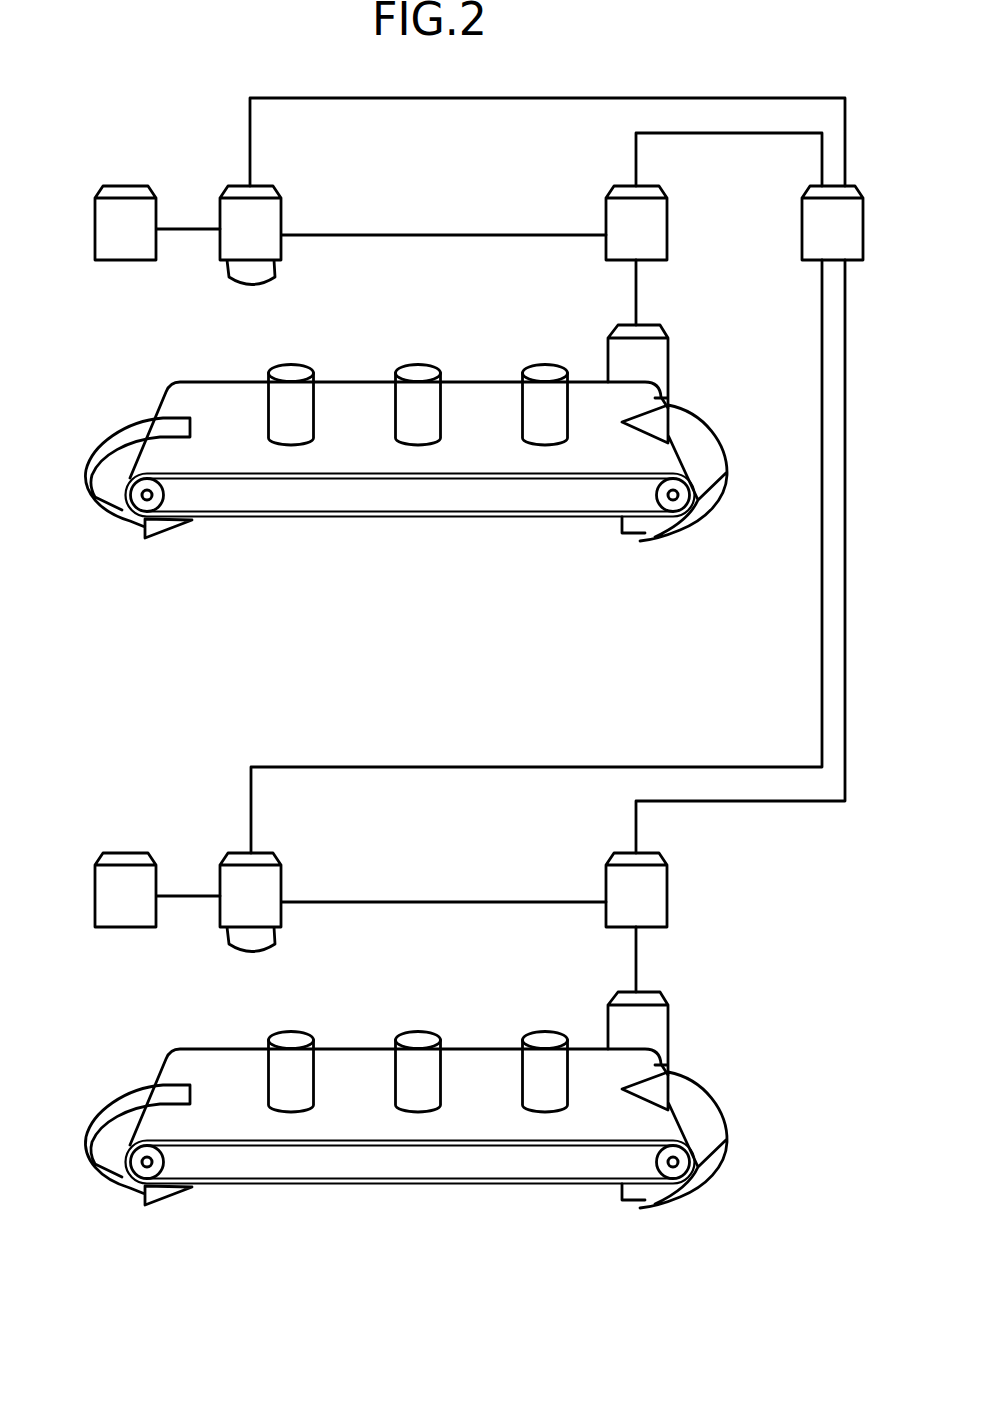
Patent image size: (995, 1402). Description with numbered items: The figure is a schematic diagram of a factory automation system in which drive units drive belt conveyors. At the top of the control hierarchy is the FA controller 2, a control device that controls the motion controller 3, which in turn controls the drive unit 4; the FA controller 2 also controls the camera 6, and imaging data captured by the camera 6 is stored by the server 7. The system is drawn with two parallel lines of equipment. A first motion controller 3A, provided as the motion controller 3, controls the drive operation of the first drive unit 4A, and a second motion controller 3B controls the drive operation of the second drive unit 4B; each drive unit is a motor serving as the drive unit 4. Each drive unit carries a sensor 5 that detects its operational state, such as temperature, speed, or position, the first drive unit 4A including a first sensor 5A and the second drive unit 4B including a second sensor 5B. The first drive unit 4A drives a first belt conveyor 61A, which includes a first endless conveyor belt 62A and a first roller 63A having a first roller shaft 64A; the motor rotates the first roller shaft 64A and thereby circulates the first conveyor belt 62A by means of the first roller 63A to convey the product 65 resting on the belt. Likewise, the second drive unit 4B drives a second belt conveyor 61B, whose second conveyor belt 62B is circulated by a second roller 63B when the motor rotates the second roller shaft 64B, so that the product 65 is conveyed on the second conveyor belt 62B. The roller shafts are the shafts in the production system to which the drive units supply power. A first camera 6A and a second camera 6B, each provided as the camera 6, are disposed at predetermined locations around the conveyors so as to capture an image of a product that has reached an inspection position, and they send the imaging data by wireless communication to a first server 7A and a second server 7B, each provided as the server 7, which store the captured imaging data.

The FA controller 2 is at (800, 224).
The motion controller 3 is at (667, 224).
The first motion controller 3A is at (666, 228).
The second motion controller 3B is at (680, 890).
The drive unit 4 is at (682, 363).
The first drive unit 4A is at (682, 363).
The second drive unit 4B is at (713, 1030).
The sensor 5 is at (663, 326).
The first sensor 5A is at (682, 363).
The second sensor 5B is at (713, 1030).
The camera 6 is at (267, 182).
The first camera 6A is at (272, 210).
The second camera 6B is at (273, 877).
The server 7 is at (121, 185).
The first server 7A is at (128, 197).
The second server 7B is at (129, 864).
The first belt conveyor 61A is at (116, 411).
The second belt conveyor 61B is at (380, 1150).
The first conveyor belt 62A is at (473, 468).
The second conveyor belt 62B is at (410, 1183).
The first roller 63A is at (662, 496).
The second roller 63B is at (653, 1200).
The first roller shaft 64A is at (673, 497).
The second roller shaft 64B is at (695, 1205).
The product 65 is at (414, 364).